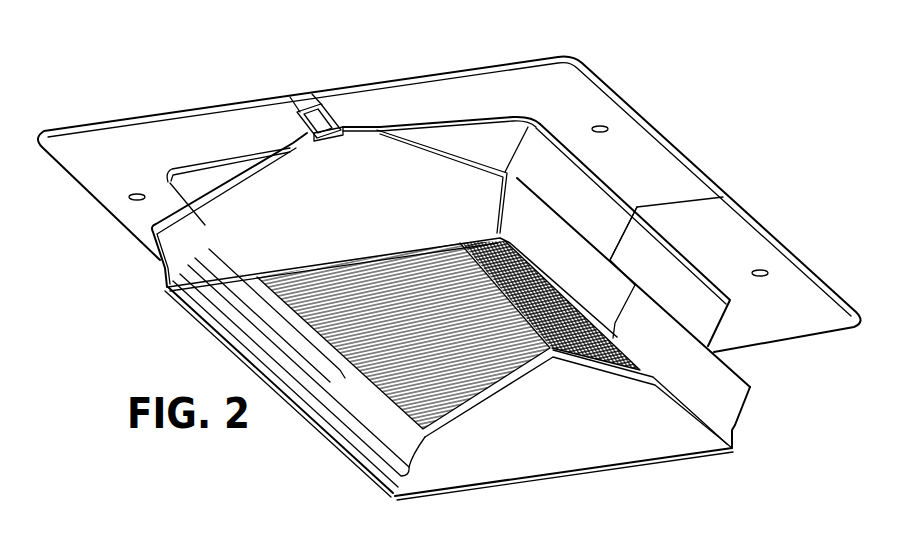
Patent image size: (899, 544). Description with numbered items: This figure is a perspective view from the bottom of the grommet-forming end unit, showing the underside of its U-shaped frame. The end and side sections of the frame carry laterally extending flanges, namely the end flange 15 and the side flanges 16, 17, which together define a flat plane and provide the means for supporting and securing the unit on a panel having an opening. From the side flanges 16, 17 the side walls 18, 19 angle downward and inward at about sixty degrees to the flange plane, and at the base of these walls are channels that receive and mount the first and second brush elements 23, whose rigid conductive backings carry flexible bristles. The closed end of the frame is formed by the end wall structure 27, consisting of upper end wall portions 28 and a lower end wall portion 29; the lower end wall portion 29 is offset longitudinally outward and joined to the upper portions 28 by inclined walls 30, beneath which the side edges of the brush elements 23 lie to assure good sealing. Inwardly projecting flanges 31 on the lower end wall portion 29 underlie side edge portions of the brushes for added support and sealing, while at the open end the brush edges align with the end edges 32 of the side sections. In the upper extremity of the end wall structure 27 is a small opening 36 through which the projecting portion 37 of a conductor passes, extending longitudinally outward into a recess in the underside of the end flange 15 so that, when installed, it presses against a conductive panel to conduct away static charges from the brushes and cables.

The end flange 15 is at (350, 103).
The side flange 16 is at (677, 178).
The side flange 17 is at (140, 217).
The side wall 18 is at (568, 180).
The side wall 19 is at (650, 255).
The brush element 23 is at (572, 340).
The end wall structure 27 is at (451, 268).
The upper end wall portion 28 is at (230, 167).
The lower end wall portion 29 is at (397, 163).
The inclined wall 30 is at (208, 193).
The inwardly projecting flange 31 is at (473, 409).
The end edge 32 is at (618, 233).
The opening 36 is at (331, 137).
The projecting portion 37 is at (340, 116).